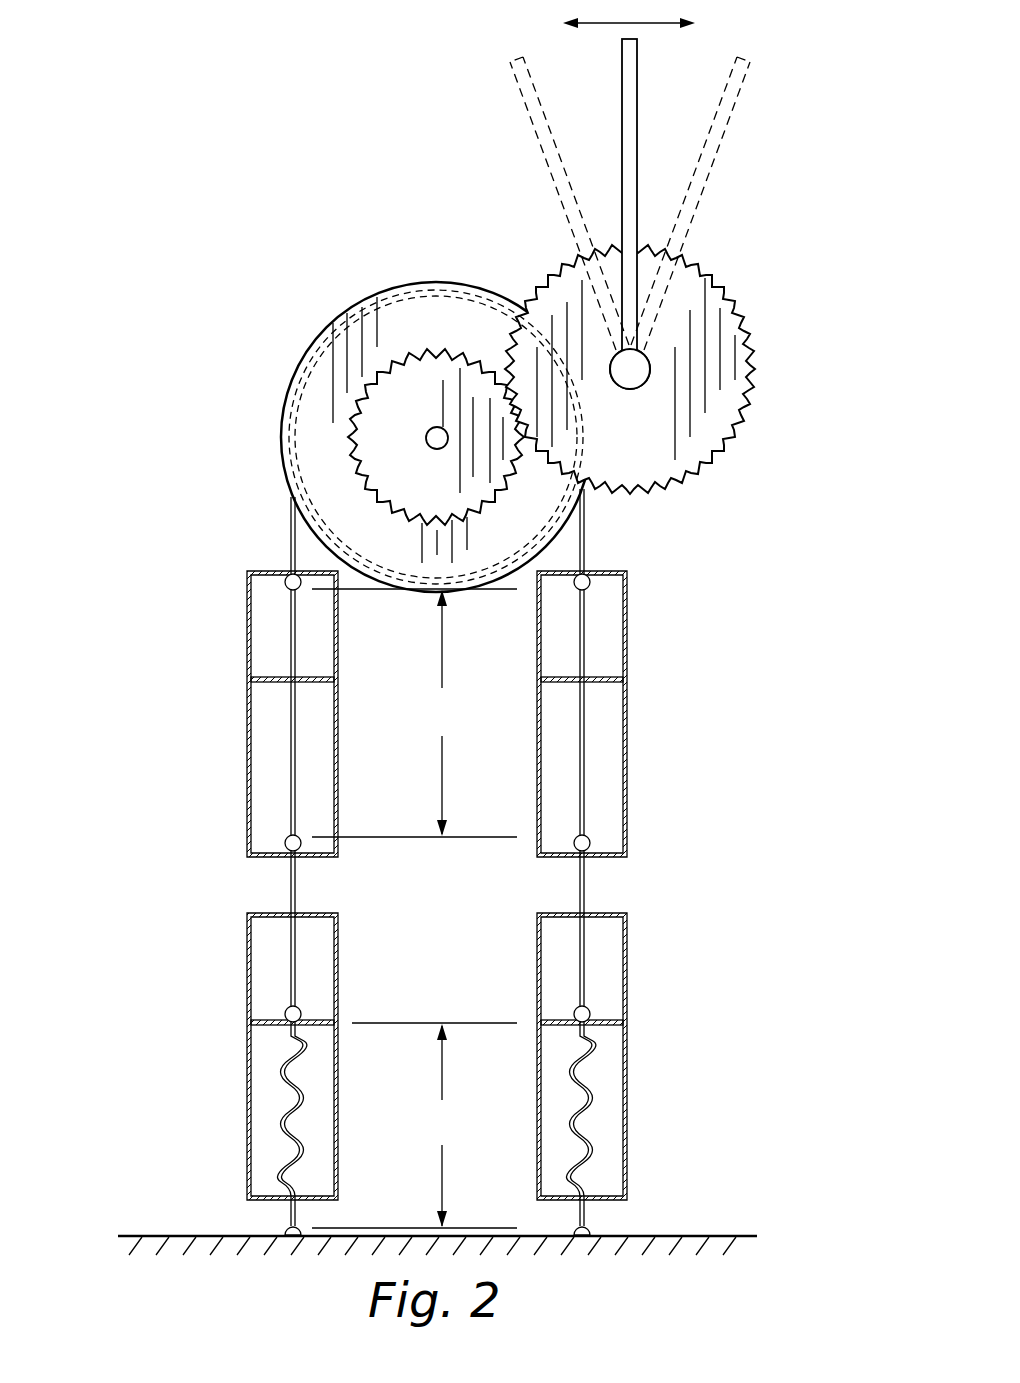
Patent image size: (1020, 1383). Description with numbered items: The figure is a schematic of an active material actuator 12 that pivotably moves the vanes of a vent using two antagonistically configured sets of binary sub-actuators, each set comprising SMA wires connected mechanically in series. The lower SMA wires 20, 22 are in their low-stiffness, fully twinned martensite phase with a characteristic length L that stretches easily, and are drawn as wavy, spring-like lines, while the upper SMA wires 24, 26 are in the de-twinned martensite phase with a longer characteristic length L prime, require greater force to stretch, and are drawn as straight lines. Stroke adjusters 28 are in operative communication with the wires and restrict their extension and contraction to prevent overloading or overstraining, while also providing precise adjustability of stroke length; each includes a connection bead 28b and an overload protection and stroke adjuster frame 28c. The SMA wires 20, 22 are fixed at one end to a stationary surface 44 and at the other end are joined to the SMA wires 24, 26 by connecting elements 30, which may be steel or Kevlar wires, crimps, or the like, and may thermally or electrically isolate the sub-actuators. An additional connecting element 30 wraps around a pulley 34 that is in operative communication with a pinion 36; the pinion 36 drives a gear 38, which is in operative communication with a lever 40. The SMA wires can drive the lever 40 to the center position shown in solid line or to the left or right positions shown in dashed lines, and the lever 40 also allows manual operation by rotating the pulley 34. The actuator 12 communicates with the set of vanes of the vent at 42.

The active material actuator 12 is at (220, 165).
The SMA wire 20 is at (288, 1110).
The SMA wire 22 is at (584, 1090).
The SMA wire 24 is at (290, 757).
The SMA wire 26 is at (584, 756).
The stroke adjuster 28 is at (226, 947).
The connection bead 28b is at (284, 1012).
The overload protection and stroke adjuster frame 28c is at (247, 1070).
The connecting element 30 is at (290, 537).
The pulley 34 is at (437, 279).
The pinion 36 is at (418, 396).
The gear 38 is at (684, 412).
The lever 40 is at (632, 121).
The operative connection to the vanes 42 is at (430, 440).
The stationary surface 44 is at (156, 1232).